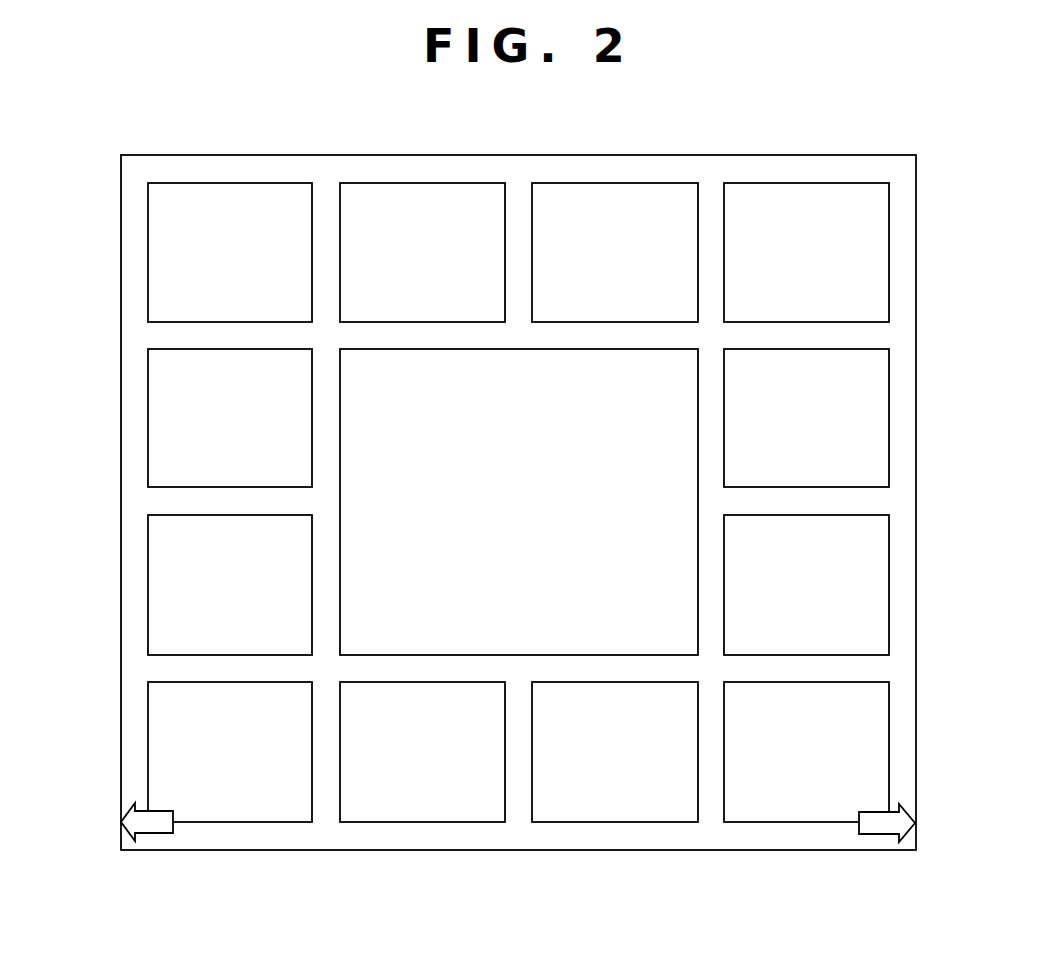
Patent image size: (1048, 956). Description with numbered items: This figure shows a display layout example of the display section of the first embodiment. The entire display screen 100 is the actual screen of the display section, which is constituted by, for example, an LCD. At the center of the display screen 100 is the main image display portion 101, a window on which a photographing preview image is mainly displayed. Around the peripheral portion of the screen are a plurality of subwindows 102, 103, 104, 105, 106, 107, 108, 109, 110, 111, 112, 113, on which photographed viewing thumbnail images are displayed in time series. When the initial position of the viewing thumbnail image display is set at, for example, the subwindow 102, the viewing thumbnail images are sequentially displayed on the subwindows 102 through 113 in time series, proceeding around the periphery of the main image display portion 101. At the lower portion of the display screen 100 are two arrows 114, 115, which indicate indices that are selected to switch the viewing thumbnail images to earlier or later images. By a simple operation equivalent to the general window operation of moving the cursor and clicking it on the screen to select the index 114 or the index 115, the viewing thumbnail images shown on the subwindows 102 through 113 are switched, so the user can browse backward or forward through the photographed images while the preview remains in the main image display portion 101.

The display screen 100 is at (779, 155).
The main image display portion 101 is at (698, 505).
The subwindow 102 is at (148, 248).
The subwindow 103 is at (424, 183).
The subwindow 104 is at (618, 183).
The subwindow 105 is at (890, 249).
The subwindow 106 is at (890, 414).
The subwindow 107 is at (890, 580).
The subwindow 108 is at (889, 748).
The subwindow 109 is at (617, 822).
The subwindow 110 is at (423, 822).
The subwindow 111 is at (148, 746).
The subwindow 112 is at (148, 580).
The subwindow 113 is at (148, 416).
The arrow 114 is at (152, 833).
The arrow 115 is at (887, 834).